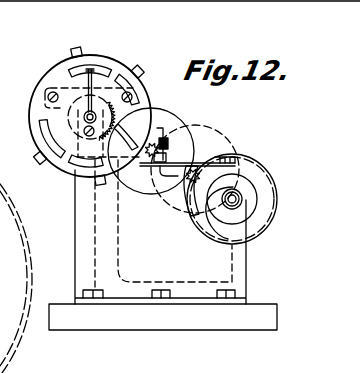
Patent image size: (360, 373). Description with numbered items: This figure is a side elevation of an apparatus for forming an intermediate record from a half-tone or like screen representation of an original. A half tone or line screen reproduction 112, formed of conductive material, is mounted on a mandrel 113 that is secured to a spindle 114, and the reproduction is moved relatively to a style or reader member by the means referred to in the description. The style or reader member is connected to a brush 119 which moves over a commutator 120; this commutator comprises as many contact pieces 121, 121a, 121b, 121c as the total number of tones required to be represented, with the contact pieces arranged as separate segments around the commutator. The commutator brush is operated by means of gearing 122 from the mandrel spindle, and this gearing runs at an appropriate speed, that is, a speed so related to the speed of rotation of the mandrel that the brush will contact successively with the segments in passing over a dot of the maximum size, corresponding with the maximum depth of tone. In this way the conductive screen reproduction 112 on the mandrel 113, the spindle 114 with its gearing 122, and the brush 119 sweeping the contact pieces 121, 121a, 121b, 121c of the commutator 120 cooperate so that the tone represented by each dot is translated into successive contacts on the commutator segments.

The half tone or line screen reproduction 112 is at (243, 172).
The mandrel 113 is at (254, 196).
The spindle 114 is at (240, 206).
The brush 119 is at (135, 88).
The commutator 120 is at (43, 78).
The contact piece 121 is at (102, 63).
The contact piece 121a is at (160, 105).
The contact piece 121b is at (212, 136).
The contact piece 121c is at (78, 165).
The gearing 122 is at (203, 215).